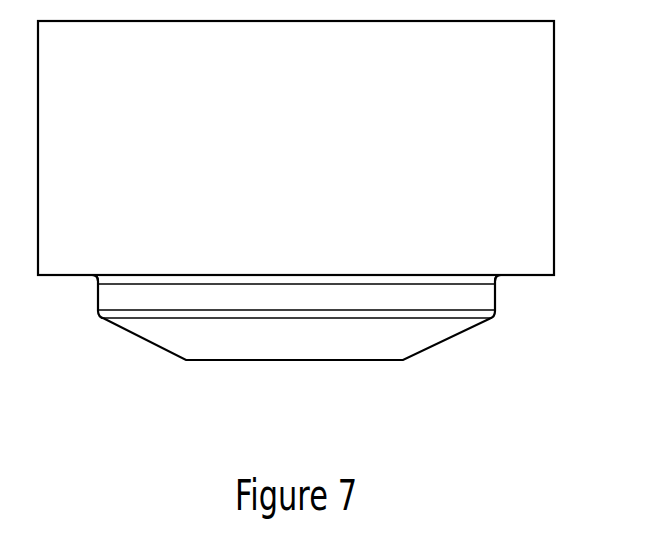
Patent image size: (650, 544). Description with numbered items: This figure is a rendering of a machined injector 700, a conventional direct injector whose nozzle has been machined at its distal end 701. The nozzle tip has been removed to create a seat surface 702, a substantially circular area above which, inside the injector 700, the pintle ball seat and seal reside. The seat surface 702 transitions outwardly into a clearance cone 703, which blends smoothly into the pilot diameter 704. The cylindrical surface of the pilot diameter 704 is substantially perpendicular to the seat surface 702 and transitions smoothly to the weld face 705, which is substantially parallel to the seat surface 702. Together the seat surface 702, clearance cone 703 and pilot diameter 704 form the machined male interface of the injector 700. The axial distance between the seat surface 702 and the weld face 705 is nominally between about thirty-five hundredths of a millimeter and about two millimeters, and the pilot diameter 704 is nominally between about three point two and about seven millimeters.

The machined injector 700 is at (309, 94).
The distal end 701 is at (353, 382).
The seat surface 702 is at (294, 362).
The clearance cone 703 is at (308, 348).
The pilot diameter 704 is at (308, 308).
The weld face 705 is at (75, 278).